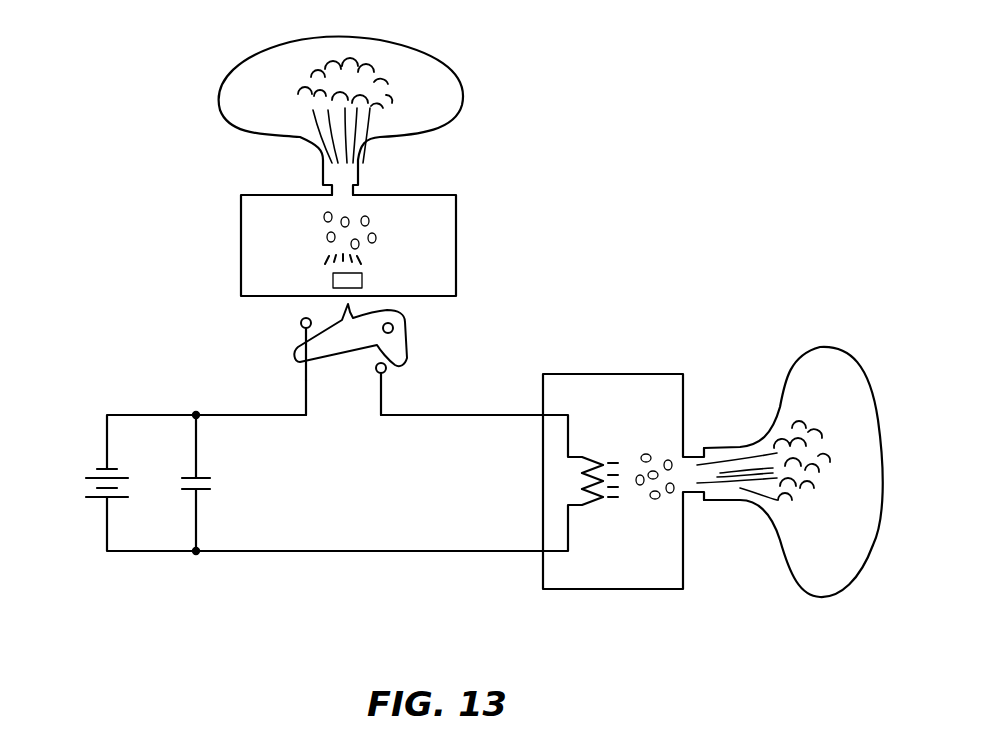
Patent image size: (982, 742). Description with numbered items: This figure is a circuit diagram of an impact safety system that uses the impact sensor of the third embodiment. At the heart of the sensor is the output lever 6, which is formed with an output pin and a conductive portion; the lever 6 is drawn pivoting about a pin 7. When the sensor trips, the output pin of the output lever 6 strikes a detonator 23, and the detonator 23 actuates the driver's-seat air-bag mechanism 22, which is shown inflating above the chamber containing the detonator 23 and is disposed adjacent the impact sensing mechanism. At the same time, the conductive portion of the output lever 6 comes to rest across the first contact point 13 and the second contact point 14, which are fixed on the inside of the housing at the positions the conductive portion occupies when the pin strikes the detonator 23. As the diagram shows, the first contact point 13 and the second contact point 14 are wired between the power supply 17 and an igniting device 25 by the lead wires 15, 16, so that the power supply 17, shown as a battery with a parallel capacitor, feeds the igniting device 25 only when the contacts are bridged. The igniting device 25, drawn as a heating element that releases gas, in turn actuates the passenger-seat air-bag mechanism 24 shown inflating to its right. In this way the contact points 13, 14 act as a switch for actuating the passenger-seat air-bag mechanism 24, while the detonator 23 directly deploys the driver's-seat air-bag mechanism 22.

The output lever 6 is at (335, 345).
The lever pivot hole 7 is at (394, 328).
The first contact point 13 is at (376, 372).
The second contact point 14 is at (300, 323).
The lead wire 15 is at (306, 392).
The lead wire 16 is at (383, 390).
The power supply 17 is at (95, 508).
The air-bag mechanism 22 is at (457, 73).
The detonator 23 is at (362, 280).
The passenger-seat air-bag mechanism 24 is at (758, 523).
The igniting device 25 is at (595, 512).